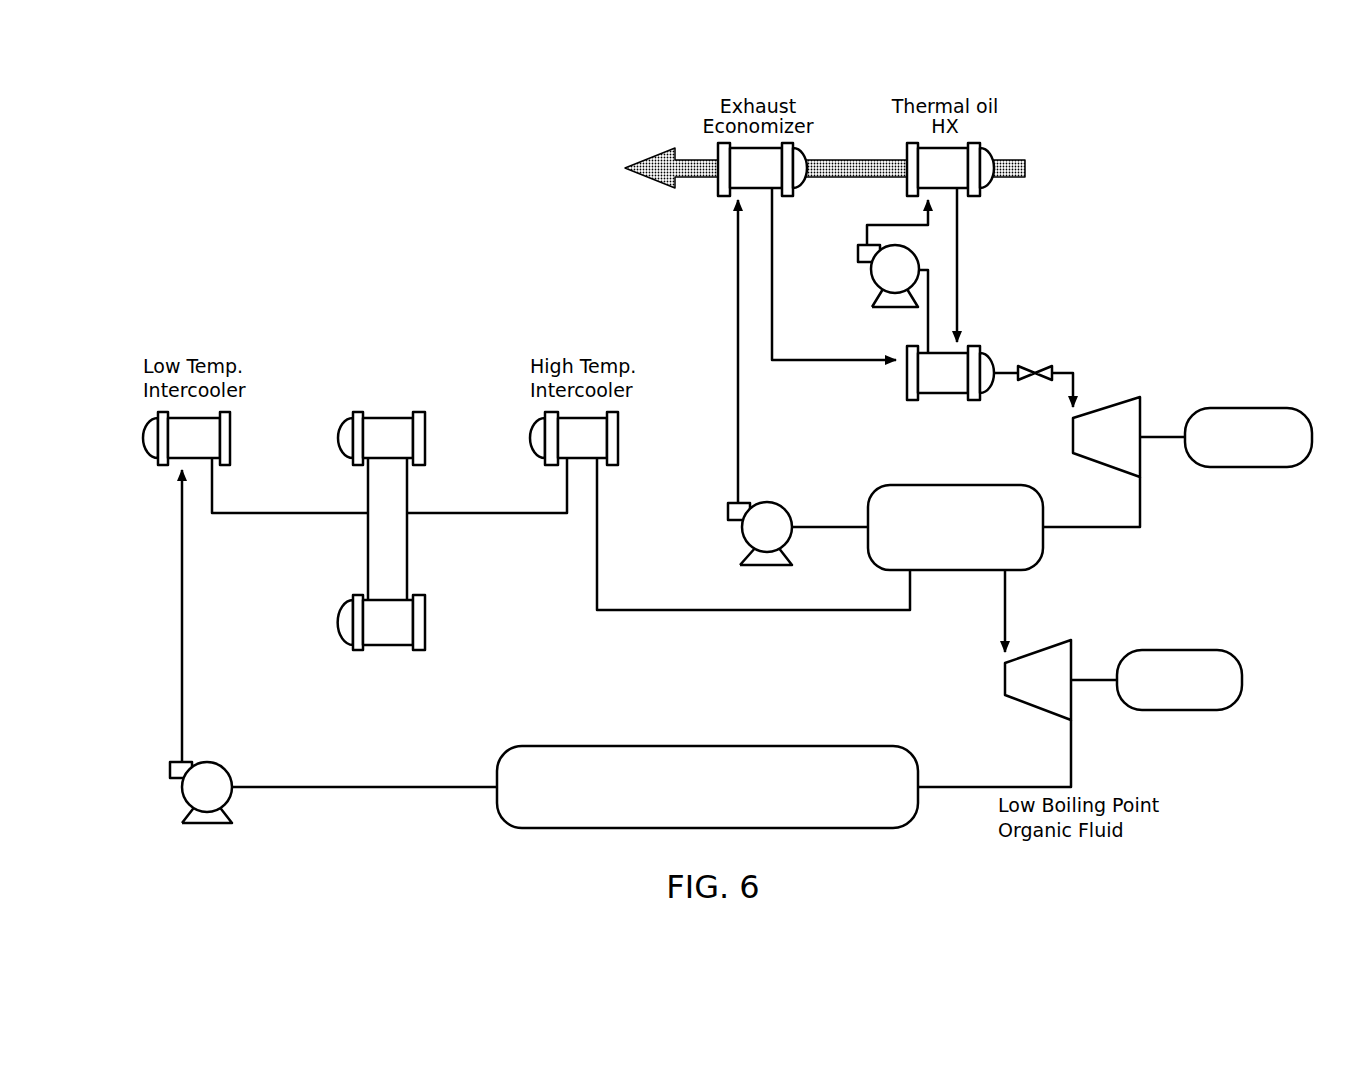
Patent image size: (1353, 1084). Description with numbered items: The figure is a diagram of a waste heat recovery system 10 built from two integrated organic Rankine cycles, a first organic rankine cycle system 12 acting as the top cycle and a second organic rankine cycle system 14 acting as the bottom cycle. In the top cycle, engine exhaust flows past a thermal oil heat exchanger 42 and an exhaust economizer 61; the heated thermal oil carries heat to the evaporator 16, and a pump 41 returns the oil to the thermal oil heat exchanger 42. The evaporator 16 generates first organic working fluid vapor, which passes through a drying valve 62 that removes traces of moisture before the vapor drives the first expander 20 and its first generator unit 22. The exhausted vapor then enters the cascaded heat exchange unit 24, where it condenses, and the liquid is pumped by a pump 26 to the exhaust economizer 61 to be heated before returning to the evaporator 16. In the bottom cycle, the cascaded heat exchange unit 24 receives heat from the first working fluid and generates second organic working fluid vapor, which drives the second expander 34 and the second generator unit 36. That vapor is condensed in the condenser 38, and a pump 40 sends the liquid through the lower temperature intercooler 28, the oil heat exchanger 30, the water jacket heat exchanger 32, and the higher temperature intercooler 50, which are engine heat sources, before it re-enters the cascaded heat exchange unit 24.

The waste heat recovery system 10 is at (185, 216).
The first organic rankine cycle system 12 is at (1116, 367).
The second organic rankine cycle system 14 is at (363, 843).
The evaporator 16 is at (991, 360).
The first expander 20 is at (1105, 470).
The first generator unit 22 is at (1251, 407).
The cascaded heat exchange unit 24 is at (934, 485).
The pump 26 is at (779, 511).
The lower temperature intercooler 28 is at (234, 447).
The oil heat exchanger 30 is at (428, 435).
The water jacket heat exchanger 32 is at (428, 619).
The second expander 34 is at (1038, 712).
The second generator unit 36 is at (1181, 650).
The condenser 38 is at (742, 745).
The pump 40 is at (223, 769).
The pump 41 is at (878, 274).
The thermal oil heat exchanger 42 is at (985, 182).
The higher temperature intercooler 50 is at (536, 436).
The exhaust economizer 61 is at (797, 182).
The drying valve 62 is at (1033, 369).